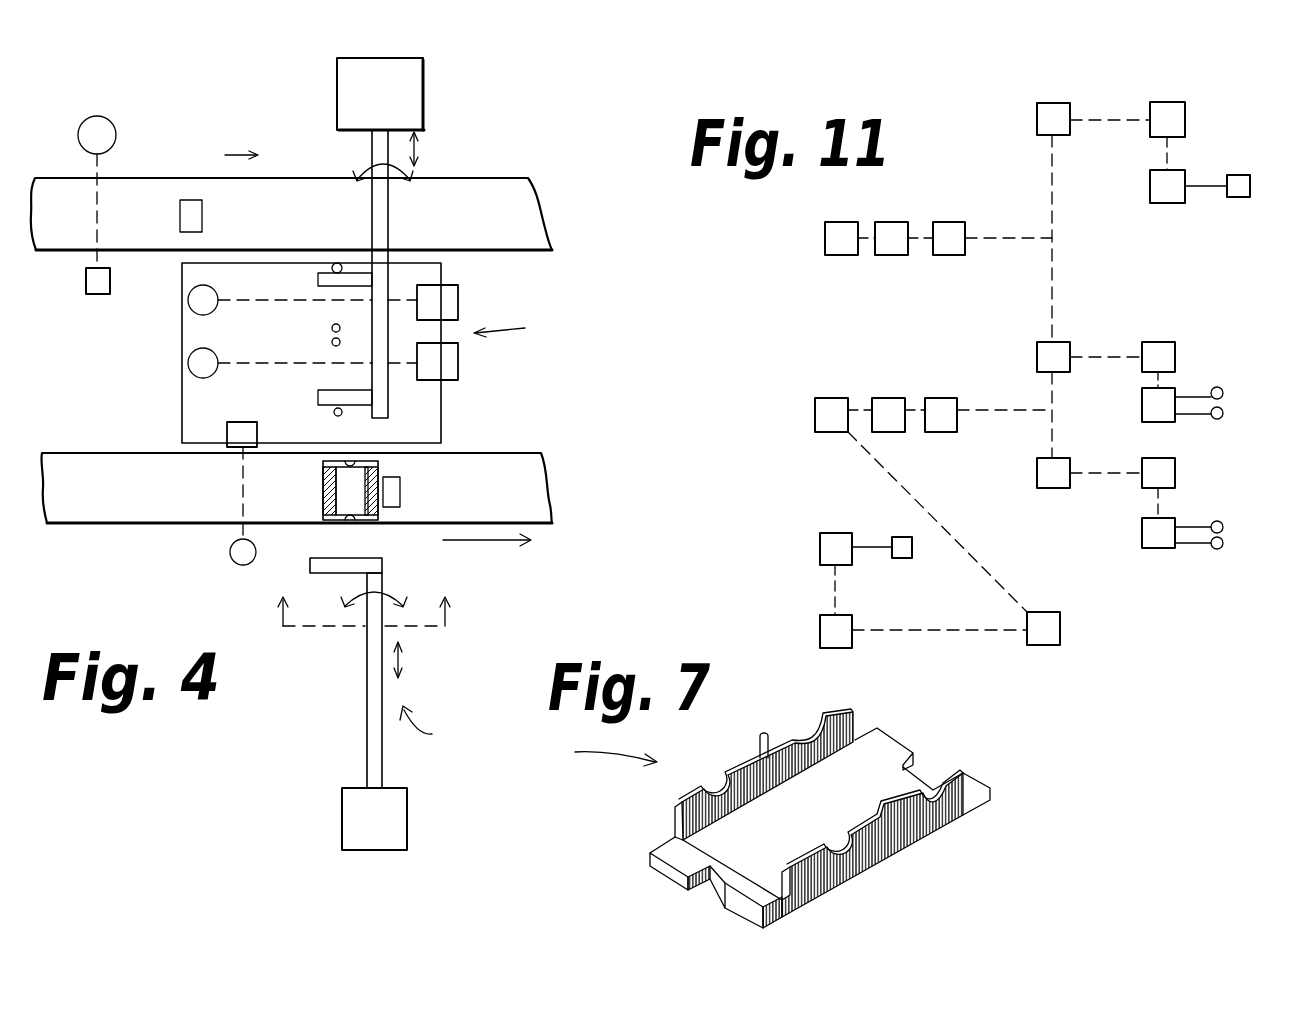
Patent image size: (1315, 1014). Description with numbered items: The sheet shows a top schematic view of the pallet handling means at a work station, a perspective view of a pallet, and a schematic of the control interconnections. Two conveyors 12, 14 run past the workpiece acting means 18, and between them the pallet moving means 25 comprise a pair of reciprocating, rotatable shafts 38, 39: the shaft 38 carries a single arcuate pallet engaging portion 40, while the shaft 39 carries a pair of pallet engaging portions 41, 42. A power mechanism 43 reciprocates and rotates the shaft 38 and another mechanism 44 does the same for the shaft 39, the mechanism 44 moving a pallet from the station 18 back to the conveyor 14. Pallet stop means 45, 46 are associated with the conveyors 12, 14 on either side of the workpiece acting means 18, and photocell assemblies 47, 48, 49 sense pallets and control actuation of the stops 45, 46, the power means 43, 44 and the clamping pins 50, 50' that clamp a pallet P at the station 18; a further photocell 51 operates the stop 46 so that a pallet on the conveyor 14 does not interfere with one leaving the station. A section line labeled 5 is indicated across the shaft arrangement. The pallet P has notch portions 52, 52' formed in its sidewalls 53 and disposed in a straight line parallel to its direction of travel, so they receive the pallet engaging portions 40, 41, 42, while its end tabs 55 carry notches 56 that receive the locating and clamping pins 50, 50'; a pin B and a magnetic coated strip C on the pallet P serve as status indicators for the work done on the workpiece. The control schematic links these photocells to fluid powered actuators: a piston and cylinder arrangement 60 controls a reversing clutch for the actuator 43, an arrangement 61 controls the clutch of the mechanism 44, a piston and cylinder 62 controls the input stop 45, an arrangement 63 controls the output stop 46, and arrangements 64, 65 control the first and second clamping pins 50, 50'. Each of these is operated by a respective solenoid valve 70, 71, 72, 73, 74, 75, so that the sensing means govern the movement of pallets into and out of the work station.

In FIG. 4, the conveyor 12 is at (133, 523).
In FIG. 4, the conveyor 14 is at (68, 250).
In FIG. 4, the workpiece acting means 18 is at (368, 353).
In FIG. 4, the pallet moving means 25 is at (357, 444).
In FIG. 4, the shaft 38 is at (367, 755).
In FIG. 4, the shaft 39 is at (388, 192).
In FIG. 4, the pallet engaging portion 40 is at (342, 558).
In FIG. 4, the pallet engaging portion 41 is at (318, 398).
In FIG. 4, the pallet engaging portion 42 is at (318, 280).
In FIG. 4, the power mechanism 43 is at (342, 812).
In FIG. 11, the power mechanism 43 is at (826, 236).
In FIG. 4, the power mechanism 44 is at (337, 100).
In FIG. 11, the power mechanism 44 is at (815, 414).
In FIG. 4, the pallet stop means 45 is at (400, 492).
In FIG. 11, the pallet stop means 45 is at (1240, 197).
In FIG. 4, the pallet stop means 46 is at (180, 224).
In FIG. 11, the pallet stop means 46 is at (900, 537).
In FIG. 4, the photocell assembly 47 is at (228, 426).
In FIG. 11, the photocell assembly 47 is at (1038, 116).
In FIG. 4, the photocell assembly 48 is at (190, 356).
In FIG. 11, the photocell assembly 48 is at (1037, 360).
In FIG. 4, the photocell assembly 49 is at (190, 306).
In FIG. 11, the photocell assembly 49 is at (1037, 468).
In FIG. 4, the clamping pin 50 is at (308, 390).
In FIG. 11, the clamping pin 50 is at (1231, 385).
In FIG. 4, the clamping pin 50' is at (307, 282).
In FIG. 11, the clamping pin 50' is at (1248, 534).
In FIG. 4, the photocell 51 is at (78, 132).
In FIG. 11, the photocell 51 is at (1060, 625).
In FIG. 7, the notch portion 52 is at (730, 851).
In FIG. 7, the notch portion 52' is at (886, 765).
In FIG. 7, the sidewall 53 is at (732, 768).
In FIG. 7, the end tab 55 is at (875, 738).
In FIG. 7, the notch 56 is at (708, 883).
In FIG. 11, the piston and cylinder arrangement 60 is at (886, 255).
In FIG. 11, the piston and cylinder arrangement 61 is at (884, 404).
In FIG. 11, the piston and cylinder 62 is at (1150, 193).
In FIG. 11, the piston and cylinder arrangement 63 is at (820, 547).
In FIG. 11, the piston and cylinder arrangement 64 is at (1142, 399).
In FIG. 11, the piston and cylinder arrangement 65 is at (1142, 538).
In FIG. 11, the solenoid valve 70 is at (950, 255).
In FIG. 11, the solenoid valve 71 is at (939, 404).
In FIG. 11, the solenoid valve 72 is at (1183, 106).
In FIG. 11, the solenoid valve 73 is at (820, 625).
In FIG. 11, the solenoid valve 74 is at (1158, 344).
In FIG. 11, the solenoid valve 75 is at (1143, 464).
In FIG. 4, the pallet P is at (378, 468).
In FIG. 7, the pallet P is at (604, 752).
In FIG. 7, the pin B is at (760, 736).
In FIG. 7, the magnetic coated strip C is at (865, 825).
In FIG. 4, the section line 5- 5 is at (359, 600).